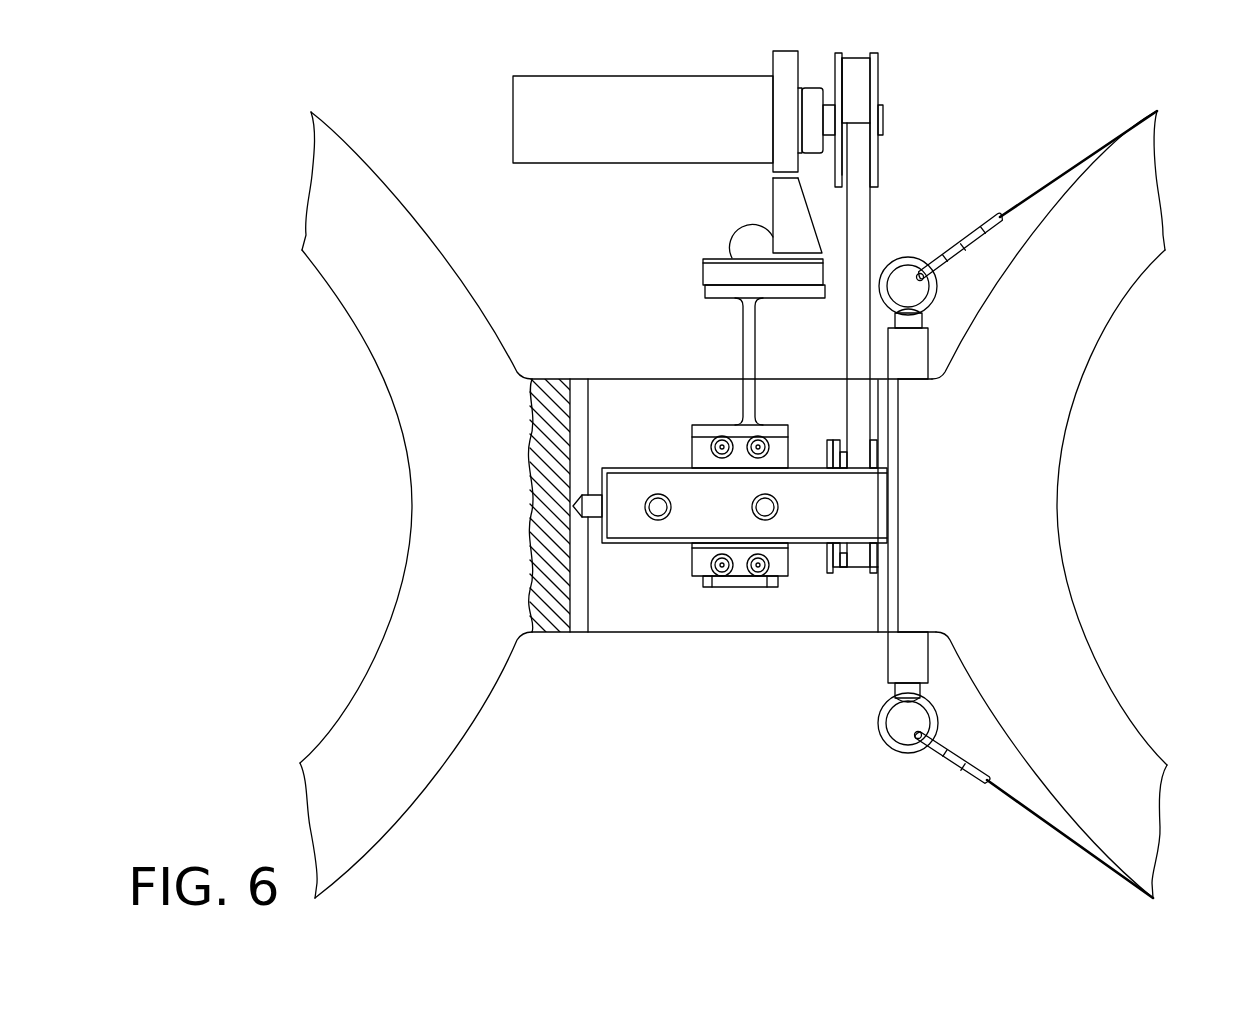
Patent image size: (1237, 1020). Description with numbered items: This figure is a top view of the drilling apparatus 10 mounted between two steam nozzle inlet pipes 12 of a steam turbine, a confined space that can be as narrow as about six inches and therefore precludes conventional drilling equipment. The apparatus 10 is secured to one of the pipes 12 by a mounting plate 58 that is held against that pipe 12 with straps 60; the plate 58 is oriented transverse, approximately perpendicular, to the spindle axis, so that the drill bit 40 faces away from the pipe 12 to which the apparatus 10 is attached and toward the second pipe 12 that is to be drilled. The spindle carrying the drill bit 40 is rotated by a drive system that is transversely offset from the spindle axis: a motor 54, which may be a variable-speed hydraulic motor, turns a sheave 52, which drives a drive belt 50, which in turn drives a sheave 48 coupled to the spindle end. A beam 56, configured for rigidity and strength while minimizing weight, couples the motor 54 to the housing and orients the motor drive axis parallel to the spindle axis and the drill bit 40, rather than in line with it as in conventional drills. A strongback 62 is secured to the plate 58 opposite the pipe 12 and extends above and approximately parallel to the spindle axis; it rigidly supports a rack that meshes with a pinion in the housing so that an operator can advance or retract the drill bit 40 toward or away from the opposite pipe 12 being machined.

The drilling apparatus 10 is at (738, 745).
The steam nozzle inlet pipe 12 is at (365, 680).
The drill bit 40 is at (583, 520).
The sheave 48 is at (837, 567).
The drive belt 50 is at (862, 225).
The sheave 52 is at (873, 155).
The motor 54 is at (632, 165).
The beam 56 is at (743, 353).
The mounting plate 58 is at (913, 353).
The strap 60 is at (1043, 187).
The strongback 62 is at (668, 480).